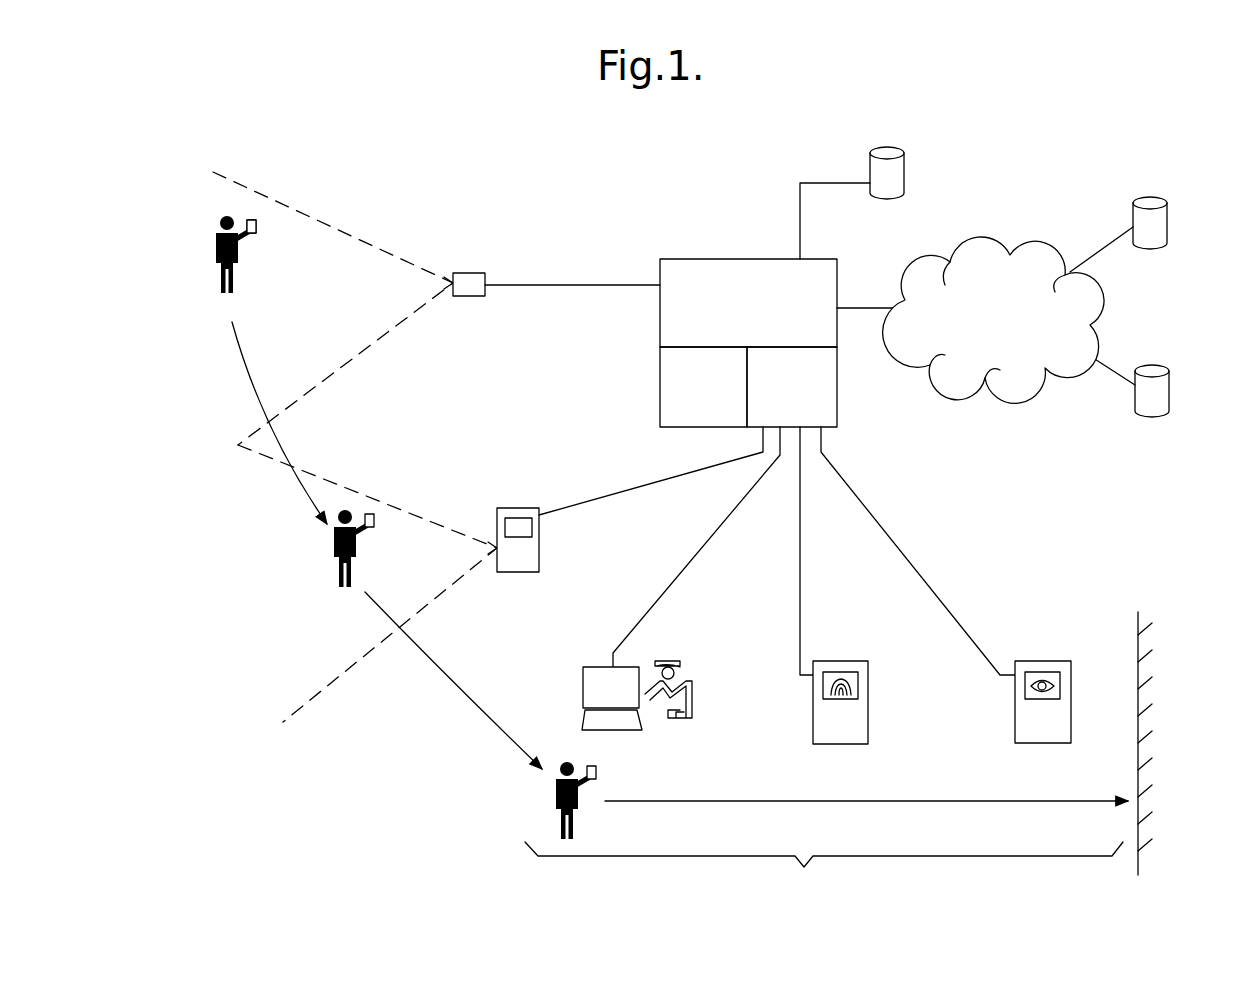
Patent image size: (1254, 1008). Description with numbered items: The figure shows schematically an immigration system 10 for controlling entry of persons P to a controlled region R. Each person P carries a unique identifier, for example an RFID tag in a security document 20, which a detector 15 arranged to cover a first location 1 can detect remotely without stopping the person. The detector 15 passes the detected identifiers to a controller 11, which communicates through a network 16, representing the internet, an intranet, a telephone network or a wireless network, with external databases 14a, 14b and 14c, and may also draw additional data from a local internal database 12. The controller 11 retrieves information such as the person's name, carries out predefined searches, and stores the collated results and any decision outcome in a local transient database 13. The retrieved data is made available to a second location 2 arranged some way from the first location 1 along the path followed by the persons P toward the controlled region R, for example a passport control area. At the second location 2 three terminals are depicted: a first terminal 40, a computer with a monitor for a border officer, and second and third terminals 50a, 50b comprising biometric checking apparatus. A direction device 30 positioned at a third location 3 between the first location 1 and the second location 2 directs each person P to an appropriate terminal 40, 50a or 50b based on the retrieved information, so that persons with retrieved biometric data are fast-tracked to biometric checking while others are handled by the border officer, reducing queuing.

The immigration system 10 is at (621, 228).
The first location 1 is at (323, 222).
The third location 3 is at (385, 507).
The second location 2 is at (826, 850).
The detector 15 is at (468, 280).
The security document 20 is at (258, 224).
The direction device 30 is at (525, 553).
The first terminal 40 is at (628, 724).
The second terminal 50a is at (823, 722).
The third terminal 50b is at (1022, 722).
The controller 11 is at (761, 324).
The local internal database 12 is at (717, 405).
The local transient database 13 is at (806, 405).
The external database 14a is at (886, 152).
The external database 14b is at (1150, 199).
The external database 14c is at (1153, 367).
The network 16 is at (1006, 324).
The person P is at (216, 281).
The controlled region R is at (1162, 743).